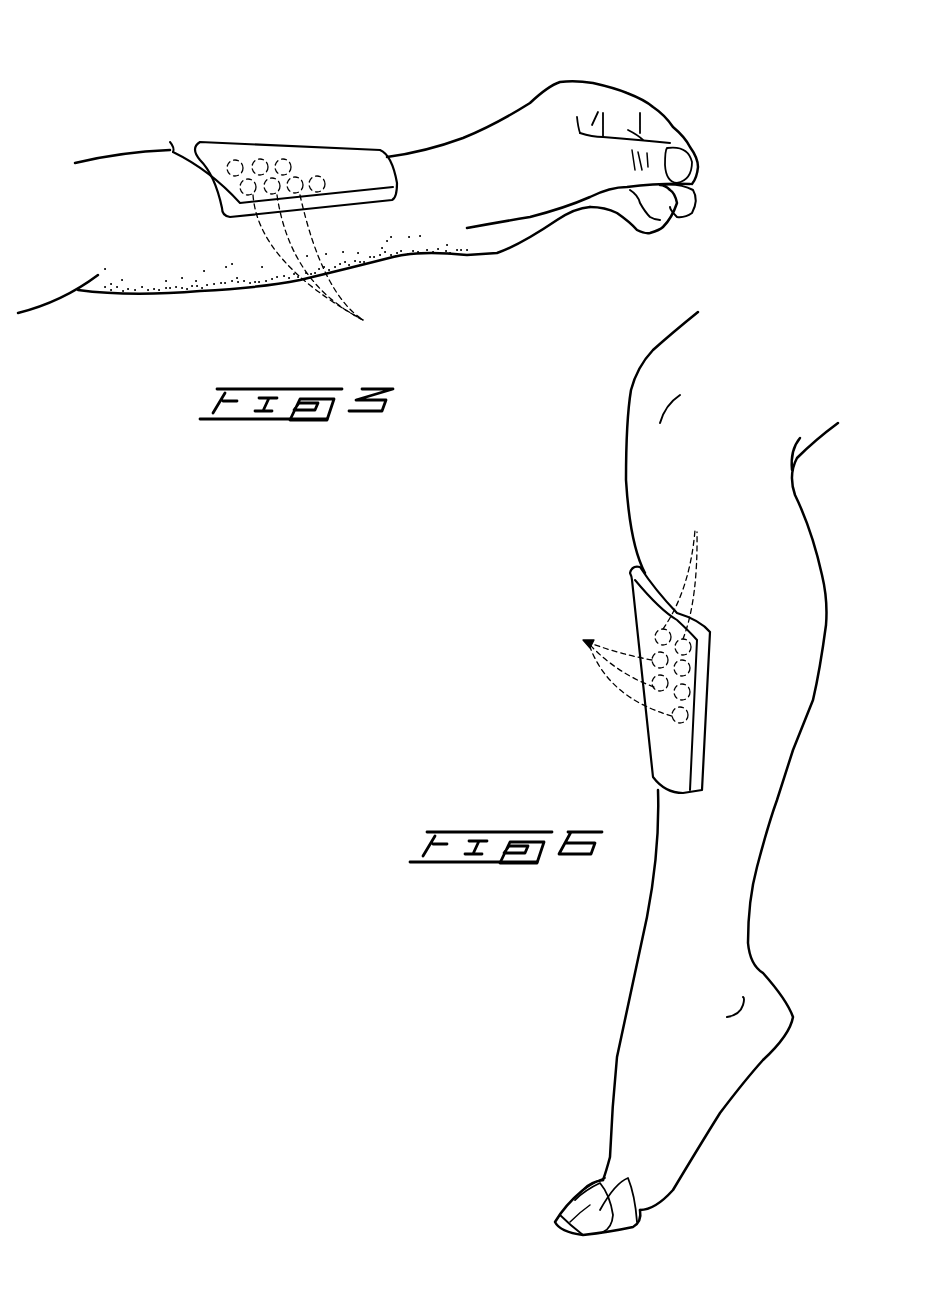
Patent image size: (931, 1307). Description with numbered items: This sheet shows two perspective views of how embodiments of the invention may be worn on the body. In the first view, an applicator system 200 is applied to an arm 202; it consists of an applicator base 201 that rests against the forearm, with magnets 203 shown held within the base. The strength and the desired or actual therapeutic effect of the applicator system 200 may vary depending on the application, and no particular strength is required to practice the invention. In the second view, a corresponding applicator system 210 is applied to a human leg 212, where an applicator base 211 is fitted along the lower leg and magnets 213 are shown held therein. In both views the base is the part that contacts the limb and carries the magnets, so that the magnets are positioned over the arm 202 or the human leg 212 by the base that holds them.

In FIG. 5, the applicator system 200 is at (348, 80).
In FIG. 5, the applicator base 201 is at (352, 158).
In FIG. 5, the arm 202 is at (175, 223).
In FIG. 5, the magnets 203 is at (325, 251).
In FIG. 6, the applicator system 210 is at (613, 650).
In FIG. 6, the applicator base 211 is at (667, 753).
In FIG. 6, the human leg 212 is at (779, 612).
In FIG. 6, the magnets 213 is at (637, 609).